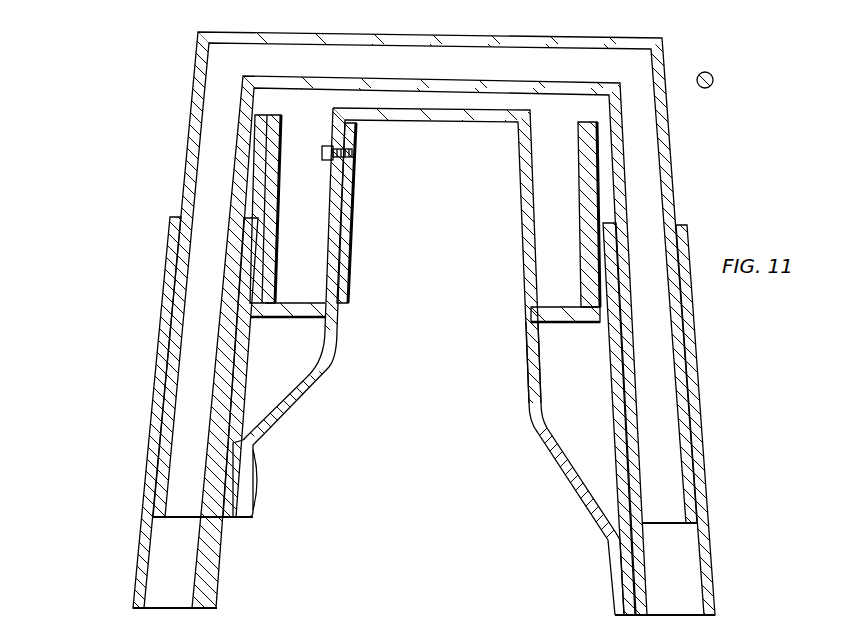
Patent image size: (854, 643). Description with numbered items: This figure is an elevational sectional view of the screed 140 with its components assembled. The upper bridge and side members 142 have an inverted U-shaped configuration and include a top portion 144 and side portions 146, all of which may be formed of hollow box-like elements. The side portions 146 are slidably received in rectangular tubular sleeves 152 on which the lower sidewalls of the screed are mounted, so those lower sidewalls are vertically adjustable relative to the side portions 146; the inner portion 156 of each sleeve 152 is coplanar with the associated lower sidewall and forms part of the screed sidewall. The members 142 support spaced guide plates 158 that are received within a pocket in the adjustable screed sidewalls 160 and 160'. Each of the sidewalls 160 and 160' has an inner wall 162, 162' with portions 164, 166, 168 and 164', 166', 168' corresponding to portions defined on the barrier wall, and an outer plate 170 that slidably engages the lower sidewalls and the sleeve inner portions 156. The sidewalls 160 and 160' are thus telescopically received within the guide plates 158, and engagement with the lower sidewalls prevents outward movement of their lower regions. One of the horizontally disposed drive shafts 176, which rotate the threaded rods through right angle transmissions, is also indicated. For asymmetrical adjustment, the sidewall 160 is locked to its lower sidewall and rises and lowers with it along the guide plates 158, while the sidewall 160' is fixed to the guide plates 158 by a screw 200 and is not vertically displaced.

The screed 140 is at (84, 310).
The upper bridge and side members 142 is at (670, 58).
The top portion 144 is at (405, 33).
The side portions 146 is at (190, 149).
The rectangular tubular sleeves 152 is at (152, 395).
The inner portion of the sleeves 156 is at (218, 548).
The guide plates 158 is at (273, 210).
The adjustable screed sidewall 160 is at (503, 436).
The adjustable screed sidewall 160' is at (358, 349).
The inner wall 162 is at (437, 255).
The inner wall 162' is at (368, 219).
The inner wall portion 164 is at (500, 362).
The inner wall portion 164' is at (376, 213).
The inner wall portion 166 is at (571, 485).
The inner wall portion 166' is at (304, 403).
The inner wall portion 168 is at (586, 574).
The inner wall portion 168' is at (279, 475).
The outer plate 170 is at (243, 372).
The drive shafts 176 is at (713, 79).
The screw 200 is at (325, 155).